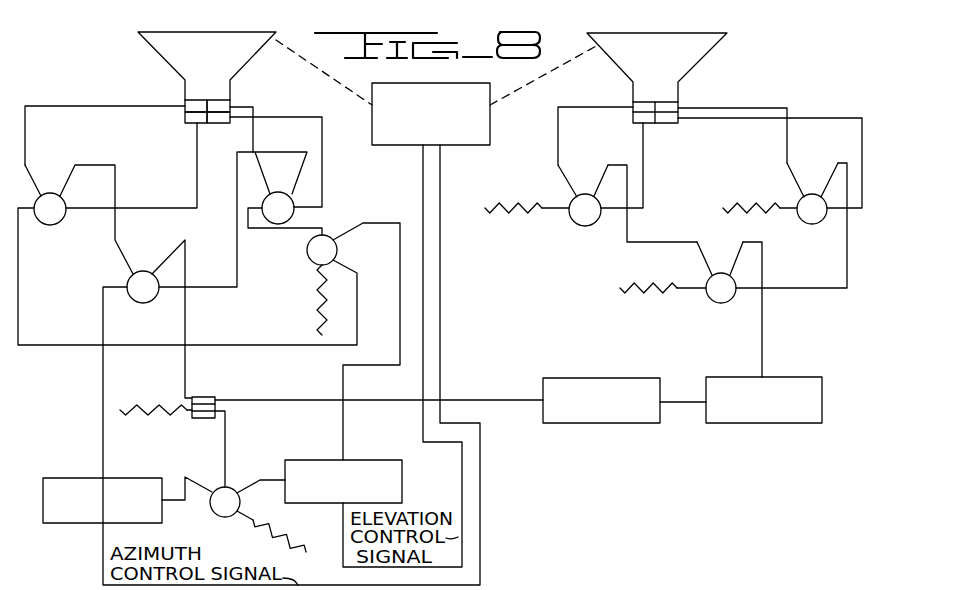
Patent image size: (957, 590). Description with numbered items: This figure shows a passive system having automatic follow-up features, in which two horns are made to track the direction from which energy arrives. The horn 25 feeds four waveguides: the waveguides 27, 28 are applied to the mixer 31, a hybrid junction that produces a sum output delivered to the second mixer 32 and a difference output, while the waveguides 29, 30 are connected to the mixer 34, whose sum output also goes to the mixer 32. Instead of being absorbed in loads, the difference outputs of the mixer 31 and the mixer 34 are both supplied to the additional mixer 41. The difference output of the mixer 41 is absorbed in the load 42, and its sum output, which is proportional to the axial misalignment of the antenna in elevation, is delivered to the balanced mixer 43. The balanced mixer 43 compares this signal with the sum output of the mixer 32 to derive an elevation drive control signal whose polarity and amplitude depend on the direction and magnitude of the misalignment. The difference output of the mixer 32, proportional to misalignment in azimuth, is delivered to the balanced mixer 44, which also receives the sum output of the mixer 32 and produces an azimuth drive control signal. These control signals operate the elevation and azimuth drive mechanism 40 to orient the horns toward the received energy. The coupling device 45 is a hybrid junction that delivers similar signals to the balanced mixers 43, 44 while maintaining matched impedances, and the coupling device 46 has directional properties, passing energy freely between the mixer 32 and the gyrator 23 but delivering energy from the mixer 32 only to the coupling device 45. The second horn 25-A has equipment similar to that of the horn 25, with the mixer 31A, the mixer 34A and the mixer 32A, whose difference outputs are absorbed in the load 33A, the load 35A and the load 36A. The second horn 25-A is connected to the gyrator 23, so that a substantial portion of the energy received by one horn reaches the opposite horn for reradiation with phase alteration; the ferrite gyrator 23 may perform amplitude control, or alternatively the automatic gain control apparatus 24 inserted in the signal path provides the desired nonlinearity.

The horn 25 is at (152, 47).
The waveguide 27 is at (197, 106).
The waveguide 28 is at (192, 118).
The waveguide 29 is at (214, 121).
The waveguide 30 is at (220, 106).
The mixer 31 is at (50, 193).
The mixer 32 is at (143, 271).
The mixer 34 is at (278, 192).
The mixer 41 is at (307, 254).
The load 42 is at (318, 292).
The elevation and azimuth drive mechanism 40 is at (408, 83).
The second horn 25-A is at (706, 54).
The mixer 31A is at (585, 194).
The mixer 32A is at (721, 273).
The mixer 34A is at (812, 194).
The load 33A is at (535, 198).
The load 35A is at (775, 199).
The load 36A is at (673, 296).
The gyrator 23 is at (579, 378).
The automatic gain control apparatus 24 is at (740, 377).
The balanced mixer 43 is at (319, 460).
The balanced mixer 44 is at (83, 478).
The coupling device 45 is at (216, 489).
The coupling device 46 is at (199, 397).